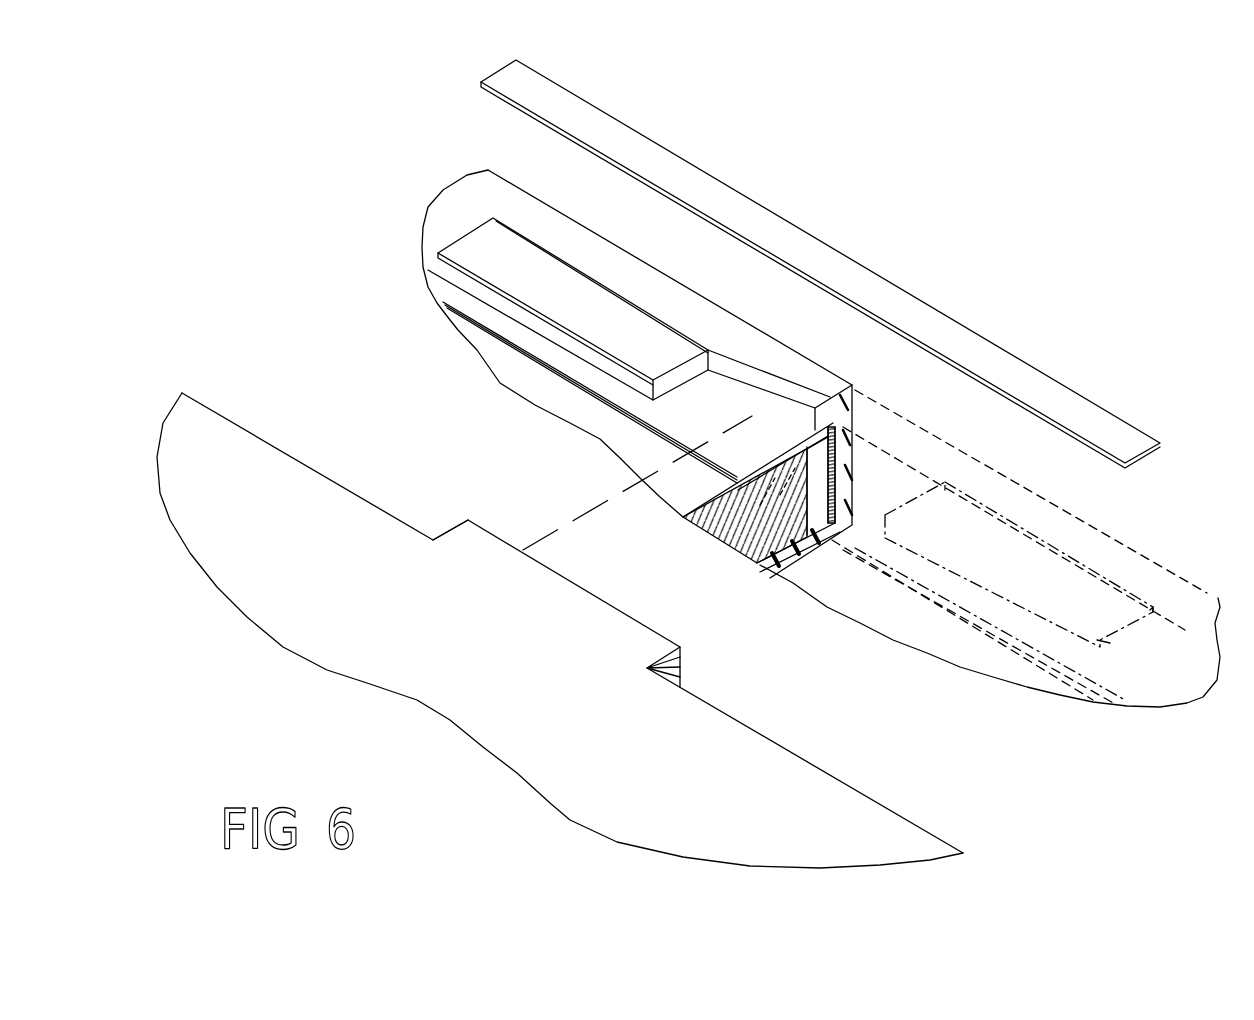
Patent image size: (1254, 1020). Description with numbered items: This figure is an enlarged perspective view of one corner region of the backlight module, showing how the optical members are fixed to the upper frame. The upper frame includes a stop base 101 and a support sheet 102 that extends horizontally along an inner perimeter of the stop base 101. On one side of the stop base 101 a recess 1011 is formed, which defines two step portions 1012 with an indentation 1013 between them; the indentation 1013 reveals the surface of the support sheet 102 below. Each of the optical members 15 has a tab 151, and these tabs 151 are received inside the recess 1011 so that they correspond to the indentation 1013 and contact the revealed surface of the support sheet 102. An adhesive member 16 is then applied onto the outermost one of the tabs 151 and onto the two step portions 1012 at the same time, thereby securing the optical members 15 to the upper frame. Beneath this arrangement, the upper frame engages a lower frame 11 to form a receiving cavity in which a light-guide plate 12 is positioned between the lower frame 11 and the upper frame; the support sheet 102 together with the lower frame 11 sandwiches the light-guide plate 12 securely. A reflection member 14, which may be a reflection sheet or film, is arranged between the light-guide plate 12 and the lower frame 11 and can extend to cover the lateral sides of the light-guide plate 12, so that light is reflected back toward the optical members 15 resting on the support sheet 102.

The adhesive member 16 is at (963, 345).
The stop base 101 is at (437, 213).
The recess 1011 is at (738, 367).
The step portions 1012 is at (588, 323).
The support sheet 102 is at (657, 412).
The indentation 1013 is at (693, 457).
The light-guide plate 12 is at (757, 565).
The reflection member 14 is at (832, 478).
The lower frame 11 is at (793, 538).
The optical members 15 is at (263, 612).
The tab 151 is at (470, 535).